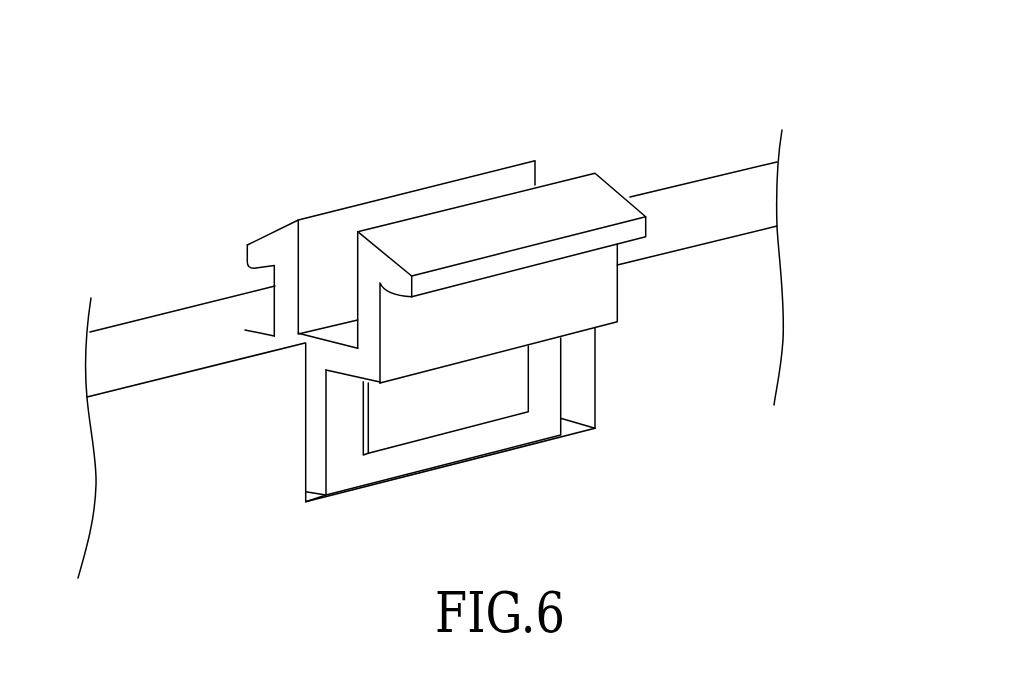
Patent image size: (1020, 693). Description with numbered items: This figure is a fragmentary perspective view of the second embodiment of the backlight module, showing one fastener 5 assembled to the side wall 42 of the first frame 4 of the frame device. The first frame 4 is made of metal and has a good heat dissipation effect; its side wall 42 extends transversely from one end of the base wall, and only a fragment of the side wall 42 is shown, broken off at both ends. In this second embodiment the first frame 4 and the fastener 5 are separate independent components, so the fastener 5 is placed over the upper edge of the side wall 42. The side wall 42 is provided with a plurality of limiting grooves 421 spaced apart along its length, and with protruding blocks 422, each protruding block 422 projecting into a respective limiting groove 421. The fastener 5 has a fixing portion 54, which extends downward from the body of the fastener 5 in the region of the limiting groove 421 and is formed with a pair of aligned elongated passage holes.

The first frame 4 is at (658, 158).
The side wall 42 is at (748, 323).
The limiting groove 421 is at (582, 377).
The protruding block 422 is at (485, 410).
The fastener 5 is at (366, 152).
The fixing portion 54 is at (552, 400).